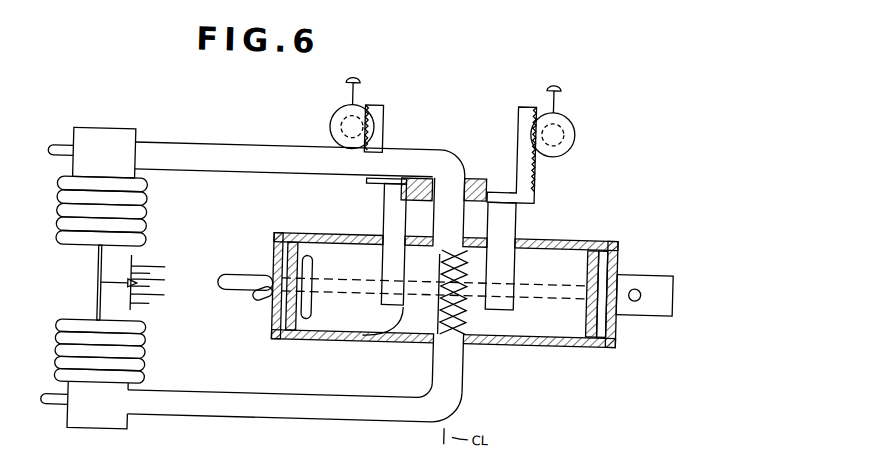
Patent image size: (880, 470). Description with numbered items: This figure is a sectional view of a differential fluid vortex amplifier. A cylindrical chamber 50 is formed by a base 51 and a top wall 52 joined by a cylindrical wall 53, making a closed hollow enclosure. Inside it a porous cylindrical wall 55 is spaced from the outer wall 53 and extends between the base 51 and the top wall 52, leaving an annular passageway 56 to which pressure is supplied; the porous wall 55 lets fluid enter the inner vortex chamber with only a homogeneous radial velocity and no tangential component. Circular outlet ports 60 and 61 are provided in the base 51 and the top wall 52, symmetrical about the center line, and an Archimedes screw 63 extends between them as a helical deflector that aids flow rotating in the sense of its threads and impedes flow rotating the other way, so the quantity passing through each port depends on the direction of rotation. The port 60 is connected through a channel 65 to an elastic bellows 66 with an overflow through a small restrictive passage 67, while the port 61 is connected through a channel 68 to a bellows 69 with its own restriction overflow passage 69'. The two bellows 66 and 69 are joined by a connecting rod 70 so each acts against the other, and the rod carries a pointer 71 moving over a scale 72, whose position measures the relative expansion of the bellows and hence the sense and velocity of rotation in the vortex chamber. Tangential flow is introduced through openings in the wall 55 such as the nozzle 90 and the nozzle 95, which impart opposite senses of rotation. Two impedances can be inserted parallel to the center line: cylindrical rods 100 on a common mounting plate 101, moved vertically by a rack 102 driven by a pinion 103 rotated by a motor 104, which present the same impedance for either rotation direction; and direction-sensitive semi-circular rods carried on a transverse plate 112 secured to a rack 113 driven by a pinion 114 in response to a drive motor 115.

The cylindrical chamber 50 is at (560, 320).
The base 51 is at (542, 345).
The top wall 52 is at (558, 237).
The cylindrical wall 53 is at (618, 257).
The porous cylindrical wall 55 is at (606, 244).
The annular passageway 56 is at (604, 323).
The outlet port 60 is at (468, 366).
The outlet port 61 is at (454, 192).
The Archimedes screw 63 is at (427, 341).
The channel 65 is at (216, 416).
The elastic bellows 66 is at (145, 361).
The restrictive passage 67 is at (56, 417).
The channel 68 is at (236, 150).
The bellows 69 is at (125, 212).
The restriction overflow passage 69' is at (92, 137).
The connecting rod 70 is at (96, 277).
The pointer 71 is at (128, 289).
The scale 72 is at (167, 290).
The opening 90 is at (307, 335).
The opening 95 is at (387, 335).
The cylindrical rods 100 is at (382, 211).
The mounting plate 101 is at (364, 183).
The rack 102 is at (380, 135).
The pinion 103 is at (340, 121).
The motor 104 is at (355, 104).
The transverse plate 112 is at (501, 199).
The rack 113 is at (526, 168).
The pinion 114 is at (556, 135).
The drive motor 115 is at (560, 117).